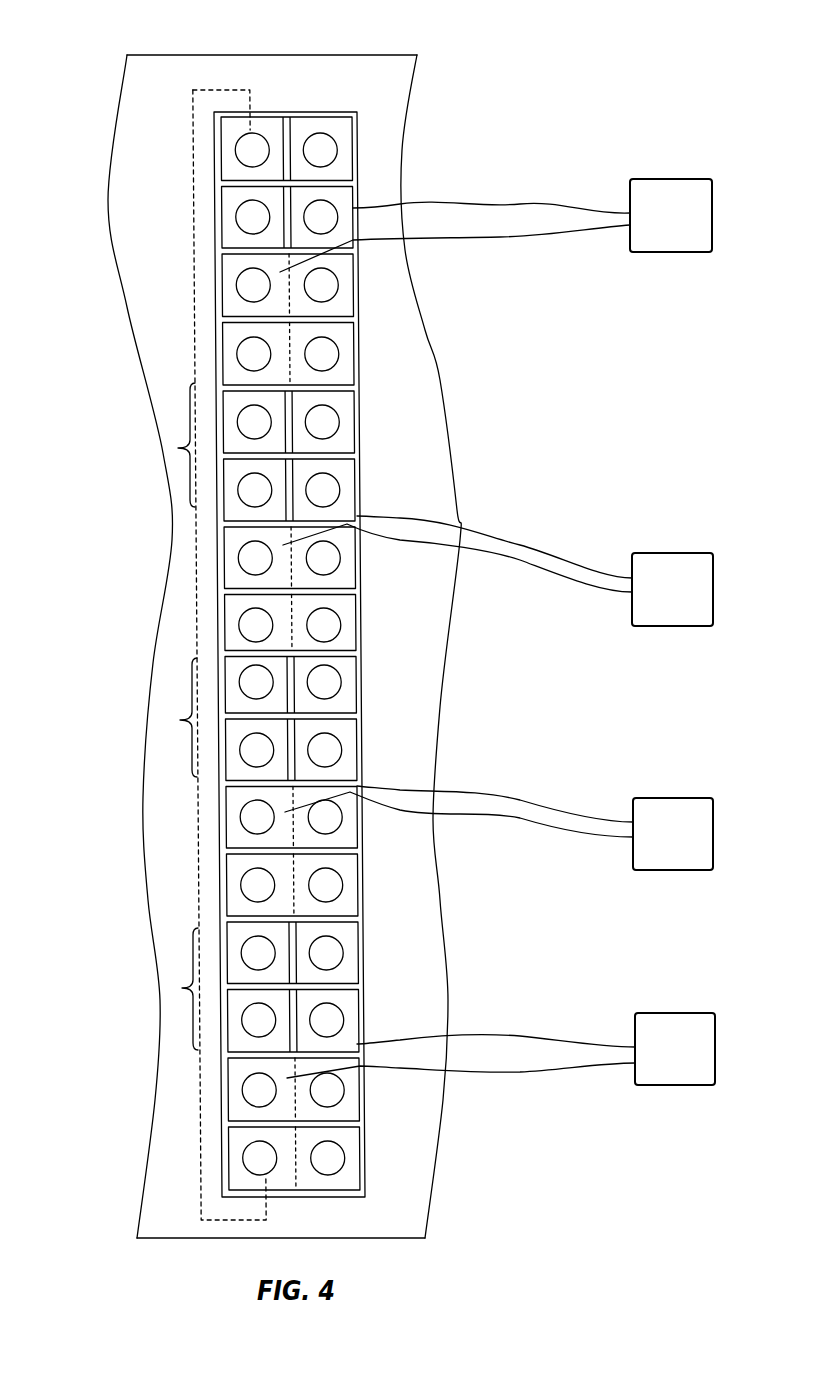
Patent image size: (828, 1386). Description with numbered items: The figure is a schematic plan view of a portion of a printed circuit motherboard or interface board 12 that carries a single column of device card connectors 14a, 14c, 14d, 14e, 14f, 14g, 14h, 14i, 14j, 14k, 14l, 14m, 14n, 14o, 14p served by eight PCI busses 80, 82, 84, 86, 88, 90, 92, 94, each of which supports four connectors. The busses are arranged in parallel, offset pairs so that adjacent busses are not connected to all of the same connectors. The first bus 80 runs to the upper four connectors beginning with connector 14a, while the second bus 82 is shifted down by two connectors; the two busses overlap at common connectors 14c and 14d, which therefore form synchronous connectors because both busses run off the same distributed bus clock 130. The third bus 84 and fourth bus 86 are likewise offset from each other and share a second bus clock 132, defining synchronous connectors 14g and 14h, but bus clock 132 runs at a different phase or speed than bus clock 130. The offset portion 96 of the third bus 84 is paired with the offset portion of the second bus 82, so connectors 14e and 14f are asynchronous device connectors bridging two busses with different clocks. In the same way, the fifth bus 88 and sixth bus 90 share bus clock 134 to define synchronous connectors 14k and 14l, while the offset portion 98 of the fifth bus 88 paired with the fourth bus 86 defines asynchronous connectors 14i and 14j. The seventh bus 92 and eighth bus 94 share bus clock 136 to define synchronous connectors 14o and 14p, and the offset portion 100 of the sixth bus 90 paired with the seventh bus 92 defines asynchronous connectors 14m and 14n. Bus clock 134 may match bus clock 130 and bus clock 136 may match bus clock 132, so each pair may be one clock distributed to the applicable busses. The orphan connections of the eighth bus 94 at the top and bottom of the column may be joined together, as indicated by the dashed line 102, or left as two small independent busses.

The motherboard 12 is at (398, 82).
The device card connector 14a is at (215, 152).
The device card connector 14c is at (348, 276).
The first connector 14d is at (348, 346).
The asynchronous device connector 14e is at (357, 410).
The second connector 14f is at (357, 492).
The synchronous device card connector 14g is at (357, 565).
The synchronous device card connector 14h is at (357, 615).
The asynchronous device connector 14i is at (357, 660).
The asynchronous device connector 14j is at (357, 748).
The synchronous connector 14k is at (357, 852).
The synchronous connector 14l is at (357, 888).
The asynchronous device connector 14m is at (360, 940).
The asynchronous device connector 14n is at (362, 1022).
The synchronous connector 14o is at (362, 1100).
The synchronous connector 14p is at (225, 1175).
The first bus 80 is at (280, 182).
The second bus 82 is at (293, 319).
The third bus 84 is at (376, 450).
The fourth bus 86 is at (322, 589).
The fifth bus 88 is at (375, 707).
The sixth bus 90 is at (301, 852).
The seventh bus 92 is at (379, 984).
The eighth bus 94 is at (292, 1124).
The offset portion 96 is at (176, 448).
The offset portion 98 is at (180, 720).
The offset portion 100 is at (182, 988).
The dashed line 102 is at (226, 90).
The bus clock 130 is at (678, 179).
The bus clock 132 is at (678, 553).
The bus clock 134 is at (670, 798).
The bus clock 136 is at (678, 1013).